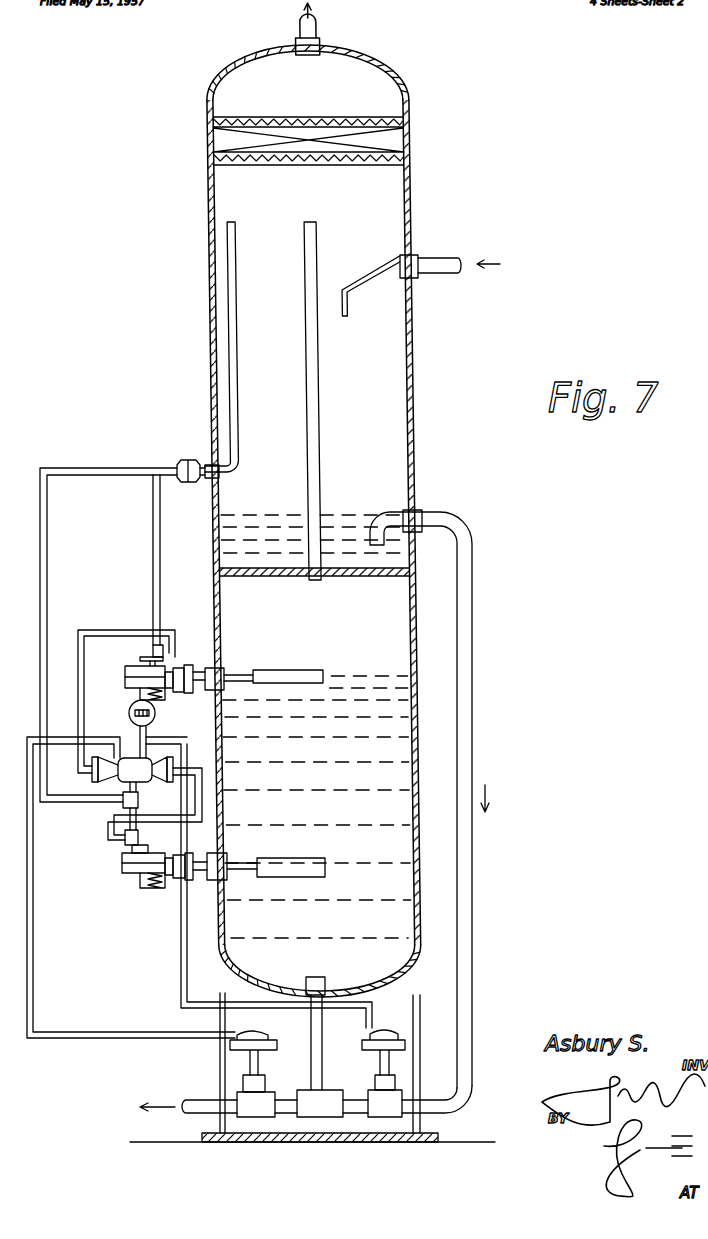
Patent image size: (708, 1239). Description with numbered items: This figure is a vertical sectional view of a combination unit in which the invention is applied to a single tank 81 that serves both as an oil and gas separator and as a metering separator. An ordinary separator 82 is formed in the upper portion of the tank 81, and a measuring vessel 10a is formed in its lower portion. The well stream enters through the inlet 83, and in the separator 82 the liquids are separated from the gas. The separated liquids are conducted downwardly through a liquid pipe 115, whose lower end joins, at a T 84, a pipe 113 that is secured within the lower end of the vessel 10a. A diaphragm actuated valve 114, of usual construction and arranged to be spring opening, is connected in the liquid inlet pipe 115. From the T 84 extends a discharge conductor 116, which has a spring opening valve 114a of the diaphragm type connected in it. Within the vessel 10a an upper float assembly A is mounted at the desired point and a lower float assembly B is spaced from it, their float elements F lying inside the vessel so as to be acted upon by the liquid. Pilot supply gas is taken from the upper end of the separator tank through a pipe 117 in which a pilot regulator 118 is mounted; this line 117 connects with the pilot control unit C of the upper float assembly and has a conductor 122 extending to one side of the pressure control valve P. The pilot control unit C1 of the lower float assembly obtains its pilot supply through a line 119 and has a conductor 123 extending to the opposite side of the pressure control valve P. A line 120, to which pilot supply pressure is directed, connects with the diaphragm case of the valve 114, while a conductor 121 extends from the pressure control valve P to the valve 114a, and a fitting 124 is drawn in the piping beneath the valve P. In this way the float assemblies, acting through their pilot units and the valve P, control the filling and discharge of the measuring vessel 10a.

The vessel 10a is at (385, 733).
The tank 81 is at (413, 613).
The separator 82 is at (362, 360).
The inlet 83 is at (440, 258).
The T 84 is at (322, 1118).
The pipe 113 is at (311, 1061).
The diaphragm actuated valve 114 is at (388, 1118).
The spring opening valve 114a is at (250, 1118).
The liquid pipe 115 is at (472, 1070).
The discharge conductor 116 is at (198, 1100).
The pipe 117 is at (237, 358).
The pilot regulator 118 is at (186, 462).
The line 119 is at (80, 468).
The line 120 is at (165, 735).
The conductor 121 is at (100, 737).
The conductor 122 is at (77, 633).
The conductor 123 is at (200, 789).
The fitting 124 is at (123, 809).
The upper float assembly A is at (116, 691).
The lower float assembly B is at (165, 905).
The pilot control unit C is at (183, 664).
The pilot control unit C1 is at (117, 856).
The pressure control valve P is at (145, 784).
The float F is at (305, 672).